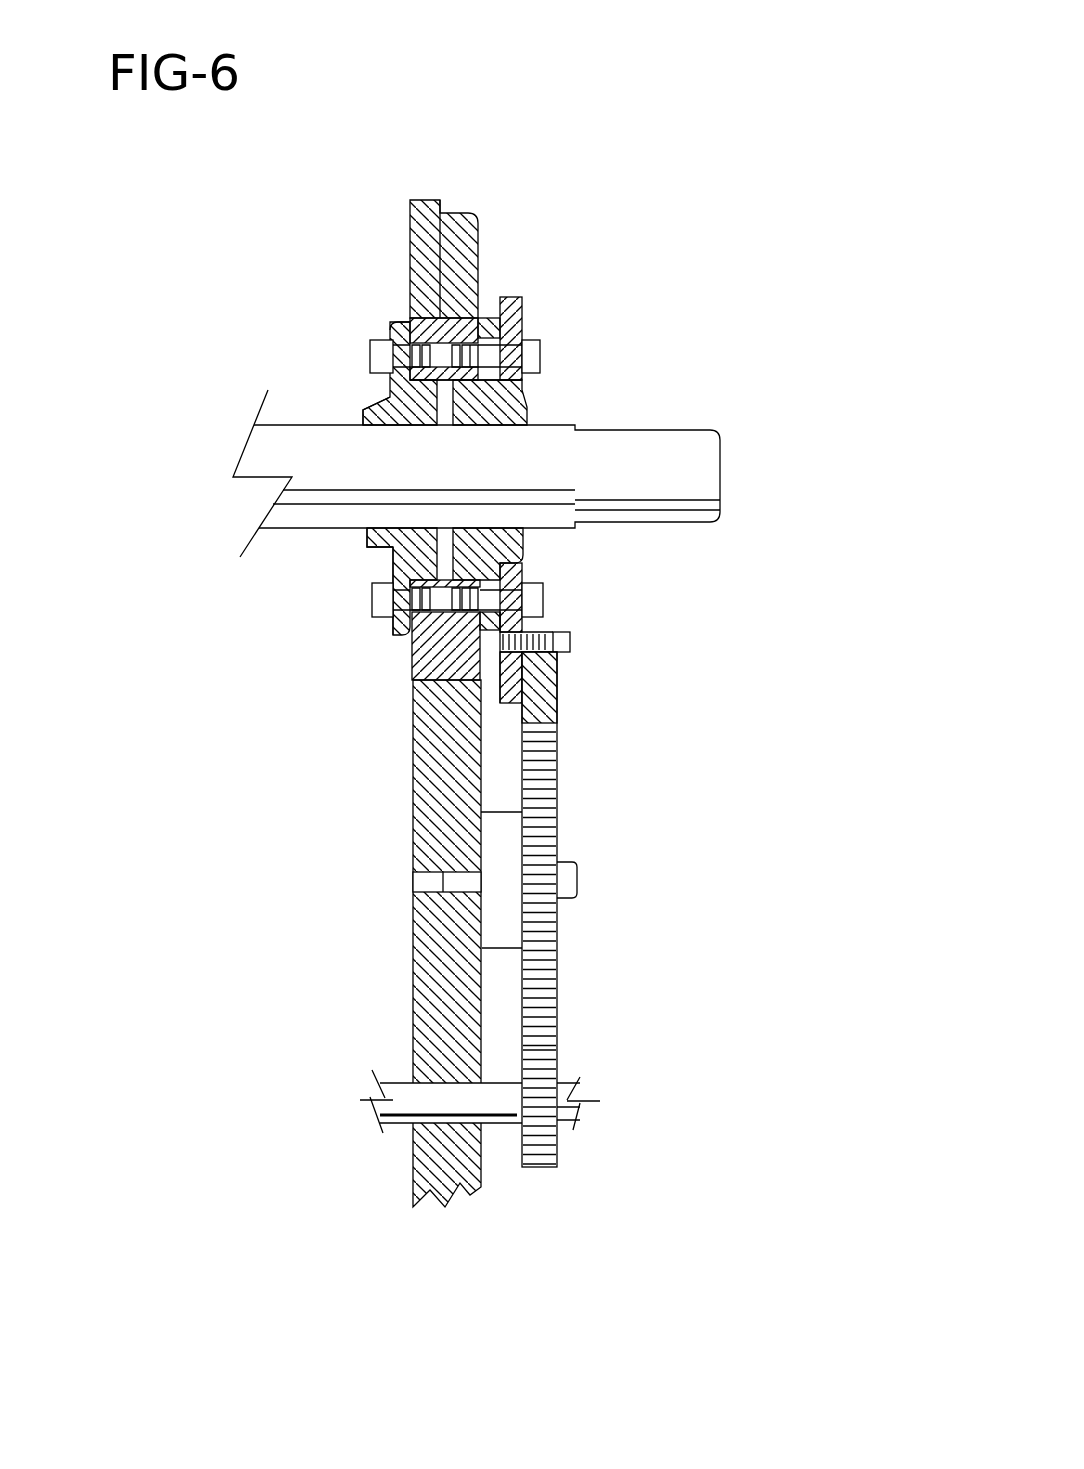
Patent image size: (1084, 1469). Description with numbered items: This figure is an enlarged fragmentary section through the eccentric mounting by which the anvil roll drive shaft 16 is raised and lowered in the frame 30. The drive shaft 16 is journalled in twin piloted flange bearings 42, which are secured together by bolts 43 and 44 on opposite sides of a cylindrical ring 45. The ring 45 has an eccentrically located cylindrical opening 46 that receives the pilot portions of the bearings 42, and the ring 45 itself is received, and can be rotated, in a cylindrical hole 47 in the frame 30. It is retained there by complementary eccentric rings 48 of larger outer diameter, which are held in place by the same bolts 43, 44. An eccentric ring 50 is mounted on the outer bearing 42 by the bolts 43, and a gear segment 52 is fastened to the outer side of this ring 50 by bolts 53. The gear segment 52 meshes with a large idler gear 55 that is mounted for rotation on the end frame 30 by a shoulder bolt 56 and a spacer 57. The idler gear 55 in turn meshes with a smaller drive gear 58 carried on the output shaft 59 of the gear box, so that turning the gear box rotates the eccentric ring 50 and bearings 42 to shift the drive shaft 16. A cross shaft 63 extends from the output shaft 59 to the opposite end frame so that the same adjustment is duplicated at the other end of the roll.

The anvil roll drive shaft 16 is at (643, 440).
The frame 30 is at (440, 200).
The piloted flange bearings 42 is at (527, 418).
The bolts 43 is at (545, 340).
The bolts 44 is at (381, 337).
The cylindrical ring 45 is at (412, 667).
The eccentrically located cylindrical opening 46 is at (392, 398).
The cylindrical hole 47 is at (468, 222).
The complementary eccentric rings 48 is at (386, 318).
The eccentric ring 50 is at (500, 322).
The gear segment 52 is at (555, 693).
The bolts 53 is at (570, 640).
The idler gear 55 is at (557, 778).
The shoulder bolt 56 is at (583, 863).
The spacer 57 is at (502, 855).
The drive gear 58 is at (557, 1160).
The output shaft 59 is at (578, 1097).
The cross shaft 63 is at (370, 1097).